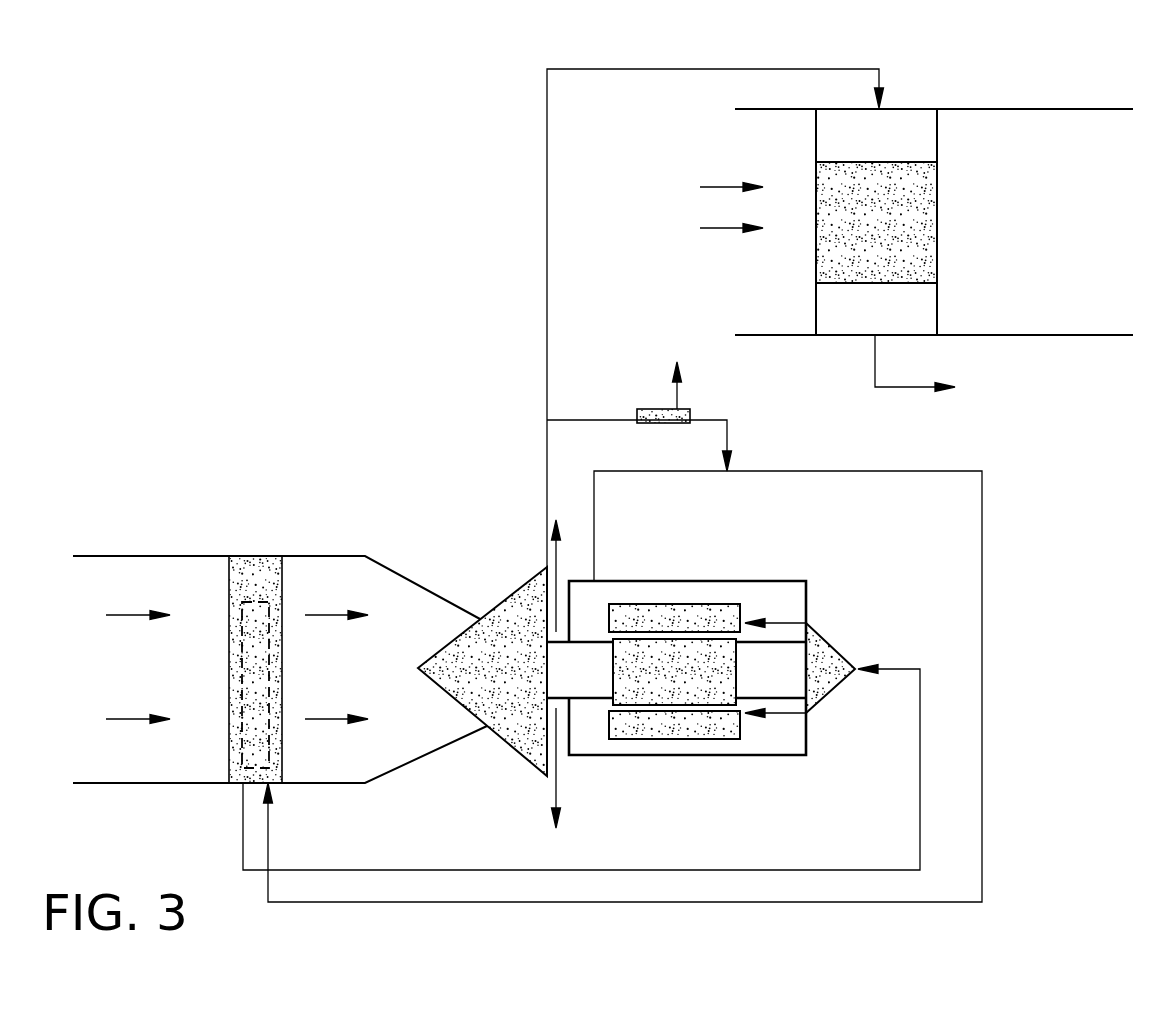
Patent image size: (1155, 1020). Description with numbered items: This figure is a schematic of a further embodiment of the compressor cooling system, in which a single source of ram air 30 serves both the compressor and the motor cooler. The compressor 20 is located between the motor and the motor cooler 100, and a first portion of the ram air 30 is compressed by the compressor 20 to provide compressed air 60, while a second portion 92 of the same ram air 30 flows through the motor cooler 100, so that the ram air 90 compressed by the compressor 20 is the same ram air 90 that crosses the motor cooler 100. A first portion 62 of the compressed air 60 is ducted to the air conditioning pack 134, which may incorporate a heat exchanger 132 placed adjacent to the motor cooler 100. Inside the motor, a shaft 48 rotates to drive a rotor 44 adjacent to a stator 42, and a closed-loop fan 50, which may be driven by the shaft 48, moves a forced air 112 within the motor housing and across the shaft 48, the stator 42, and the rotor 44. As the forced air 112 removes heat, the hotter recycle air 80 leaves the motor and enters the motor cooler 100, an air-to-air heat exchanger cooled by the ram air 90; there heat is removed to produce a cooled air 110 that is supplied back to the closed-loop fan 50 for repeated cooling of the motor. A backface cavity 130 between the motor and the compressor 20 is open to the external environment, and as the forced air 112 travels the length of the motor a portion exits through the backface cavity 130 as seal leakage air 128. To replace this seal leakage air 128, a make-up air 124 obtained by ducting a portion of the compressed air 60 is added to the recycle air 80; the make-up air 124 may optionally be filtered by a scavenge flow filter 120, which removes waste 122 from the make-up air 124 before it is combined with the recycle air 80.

The compressor 20 is at (488, 679).
The ram air 30 is at (127, 615).
The stator 42 is at (658, 631).
The rotor 44 is at (658, 685).
The shaft 48 is at (778, 665).
The closed-loop fan 50 is at (838, 682).
The compressed air 60 is at (547, 487).
The first portion of compressed air 62 is at (547, 266).
The recycle air 80 is at (594, 519).
The ram air 90 is at (722, 187).
The second portion of ram air 92 is at (323, 615).
The motor cooler 100 is at (255, 580).
The cooled air 110 is at (243, 830).
The forced air 112 is at (800, 622).
The scavenge flow filter 120 is at (660, 409).
The waste 122 is at (677, 398).
The make-up air 124 is at (594, 420).
The seal leakage air 128 is at (560, 572).
The backface cavity 130 is at (556, 706).
The heat exchanger 132 is at (855, 236).
The air conditioning pack 134 is at (898, 130).